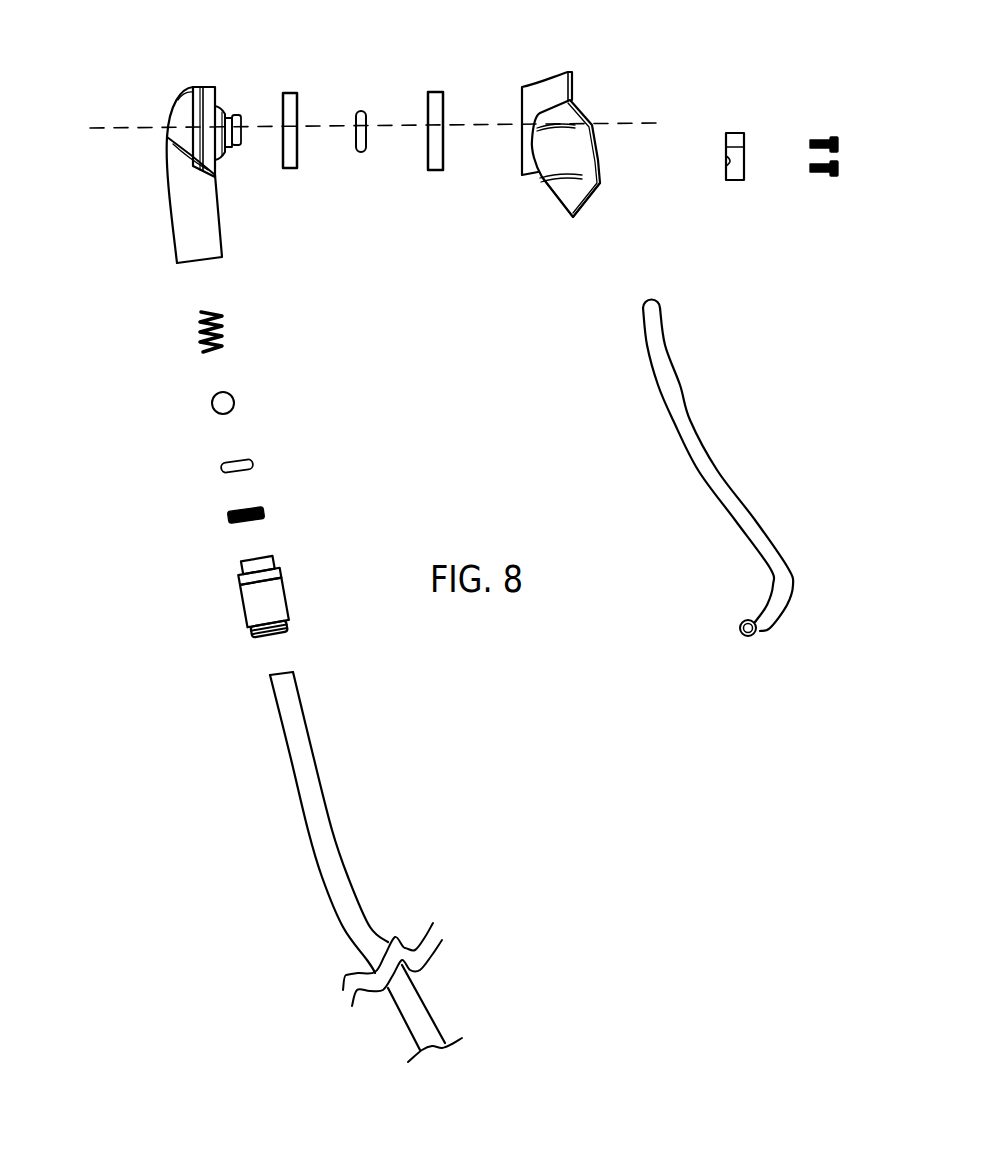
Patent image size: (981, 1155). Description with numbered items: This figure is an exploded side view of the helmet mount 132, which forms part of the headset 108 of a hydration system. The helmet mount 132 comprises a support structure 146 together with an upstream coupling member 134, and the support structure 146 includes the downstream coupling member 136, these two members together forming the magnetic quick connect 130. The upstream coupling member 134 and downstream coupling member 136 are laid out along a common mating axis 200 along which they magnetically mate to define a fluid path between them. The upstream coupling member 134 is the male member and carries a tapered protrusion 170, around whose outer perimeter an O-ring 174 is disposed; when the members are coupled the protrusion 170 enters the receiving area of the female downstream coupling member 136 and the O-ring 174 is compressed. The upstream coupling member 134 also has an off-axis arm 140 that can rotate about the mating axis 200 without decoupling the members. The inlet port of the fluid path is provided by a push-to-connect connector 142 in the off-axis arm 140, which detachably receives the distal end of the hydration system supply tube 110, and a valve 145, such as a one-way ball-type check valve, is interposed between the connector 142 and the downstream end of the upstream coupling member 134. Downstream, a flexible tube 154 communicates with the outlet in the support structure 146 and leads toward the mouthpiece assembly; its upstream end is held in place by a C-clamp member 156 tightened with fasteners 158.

The mating axis 200 is at (102, 115).
The headset 108 is at (405, 335).
The supply tube 110 is at (323, 792).
The magnetic quick connect 130 is at (458, 222).
The helmet mount 132 is at (603, 190).
The upstream coupling member 134 is at (193, 88).
The downstream coupling member 136 is at (552, 85).
The off-axis arm 140 is at (213, 225).
The connector 142 is at (243, 608).
The valve 145 is at (185, 322).
The support structure 146 is at (587, 107).
The flexible tube 154 is at (682, 422).
The C-clamp member 156 is at (740, 133).
The fasteners 158 is at (840, 144).
The protrusion 170 is at (227, 107).
The O-ring 174 is at (360, 110).